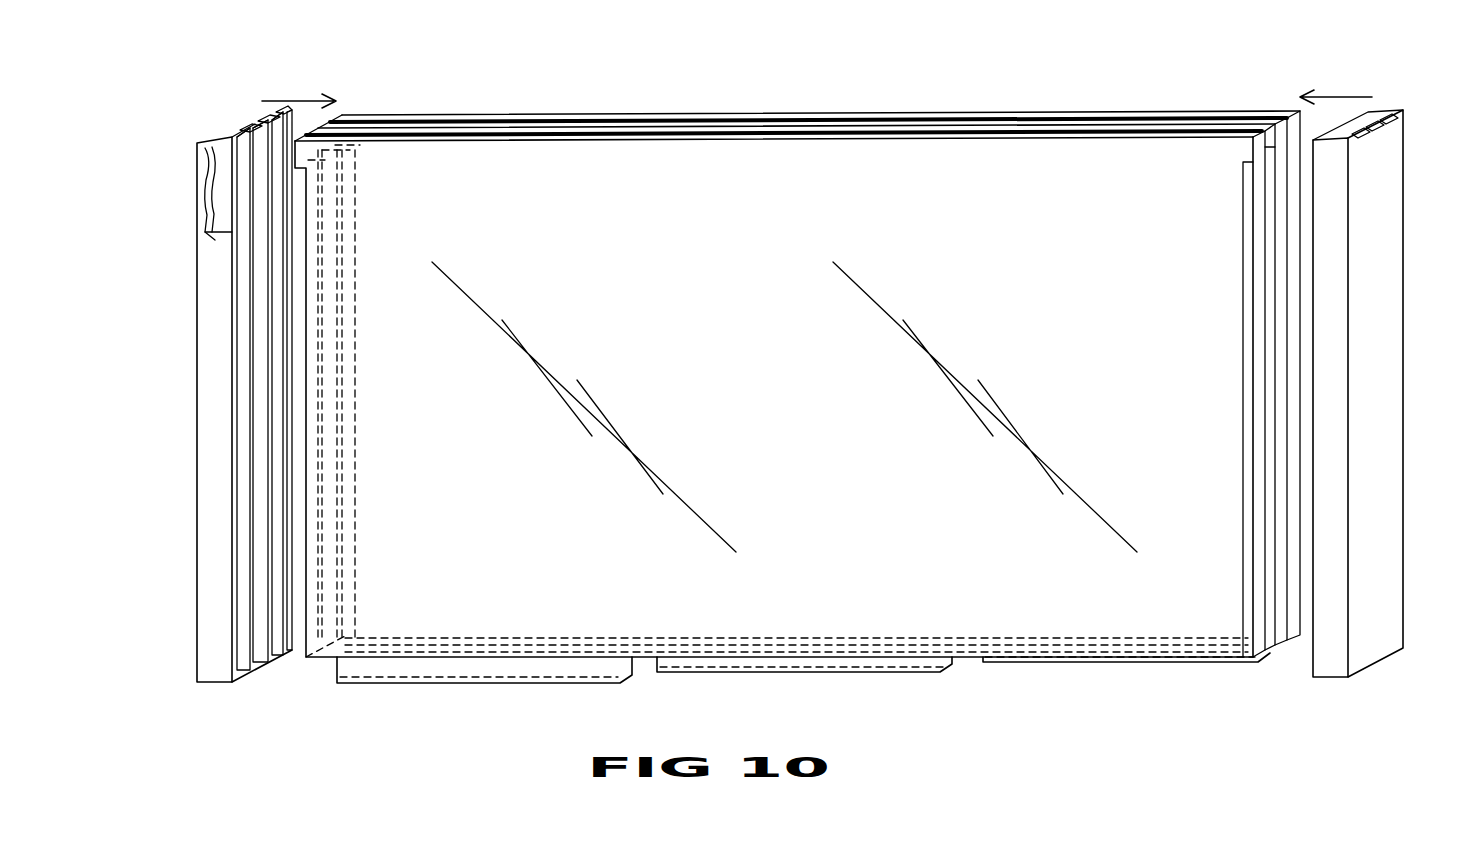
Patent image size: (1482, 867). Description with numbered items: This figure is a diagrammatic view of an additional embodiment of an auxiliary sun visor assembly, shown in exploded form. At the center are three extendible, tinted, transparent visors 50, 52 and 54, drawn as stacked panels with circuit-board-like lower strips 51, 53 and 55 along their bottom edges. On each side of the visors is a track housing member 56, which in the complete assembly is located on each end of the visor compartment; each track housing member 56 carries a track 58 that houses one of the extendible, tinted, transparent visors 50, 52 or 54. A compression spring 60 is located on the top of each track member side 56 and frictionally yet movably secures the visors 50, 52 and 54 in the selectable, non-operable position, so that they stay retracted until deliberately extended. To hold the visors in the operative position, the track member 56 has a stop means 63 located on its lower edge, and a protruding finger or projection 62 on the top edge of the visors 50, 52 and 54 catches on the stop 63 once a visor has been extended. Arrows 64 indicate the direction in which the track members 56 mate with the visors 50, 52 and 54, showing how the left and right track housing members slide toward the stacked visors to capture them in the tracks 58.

The extendible tinted transparent visor 50 is at (822, 118).
The circuit board 51 is at (1080, 664).
The extendible tinted transparent visor 52 is at (718, 128).
The circuit board 53 is at (857, 664).
The extendible tinted transparent visor 54 is at (610, 140).
The circuit board 55 is at (487, 662).
The track housing member 56 is at (1385, 215).
The track 58 is at (270, 133).
The compression spring 60 is at (230, 150).
The protruding finger or projection 62 is at (295, 140).
The stop means 63 is at (240, 680).
The arrows 64 is at (1335, 92).